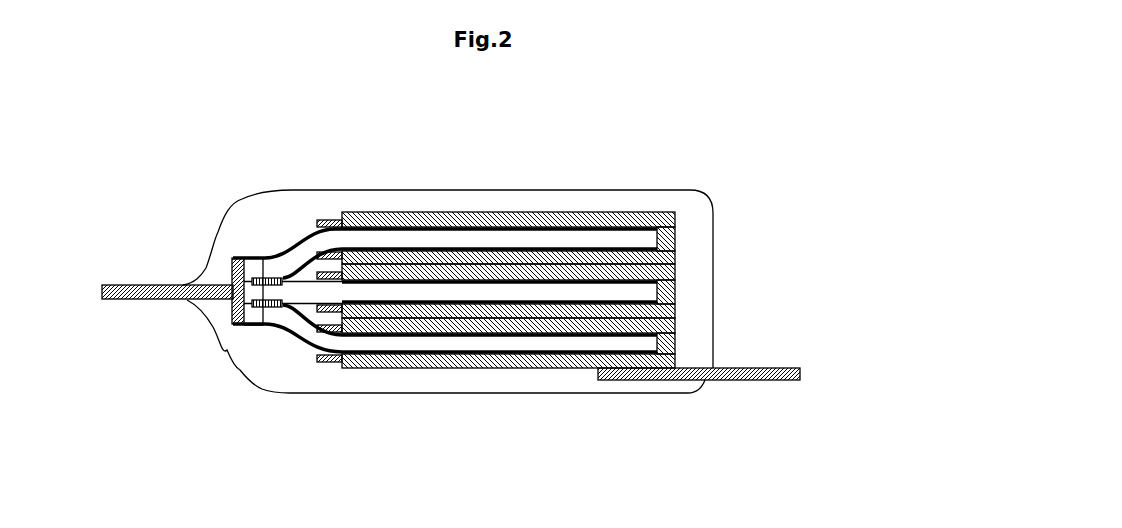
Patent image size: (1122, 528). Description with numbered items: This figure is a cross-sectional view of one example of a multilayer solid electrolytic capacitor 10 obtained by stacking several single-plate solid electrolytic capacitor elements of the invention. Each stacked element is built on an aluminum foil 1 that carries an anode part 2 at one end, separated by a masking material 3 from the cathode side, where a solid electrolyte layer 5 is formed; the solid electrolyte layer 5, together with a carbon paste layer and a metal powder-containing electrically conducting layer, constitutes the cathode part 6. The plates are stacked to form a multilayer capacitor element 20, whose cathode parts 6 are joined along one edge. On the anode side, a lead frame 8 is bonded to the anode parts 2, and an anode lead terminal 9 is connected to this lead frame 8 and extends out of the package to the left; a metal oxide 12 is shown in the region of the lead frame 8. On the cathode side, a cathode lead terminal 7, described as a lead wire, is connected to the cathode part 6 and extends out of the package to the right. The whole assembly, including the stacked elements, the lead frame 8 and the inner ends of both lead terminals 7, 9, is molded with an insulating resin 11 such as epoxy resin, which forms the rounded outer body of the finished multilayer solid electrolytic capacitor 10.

The aluminum foil 1 is at (442, 232).
The anode part 2 is at (343, 370).
The masking material 3 is at (330, 221).
The solid electrolyte layer 5 is at (522, 217).
The cathode part 6 is at (505, 388).
The cathode lead terminal 7 is at (758, 381).
The lead frame 8 is at (233, 324).
The anode lead terminal 9 is at (152, 299).
The multilayer solid electrolytic capacitor 10 is at (631, 179).
The insulating resin 11 is at (687, 203).
The metal oxide 12 is at (263, 258).
The multilayer capacitor element 20 is at (812, 267).